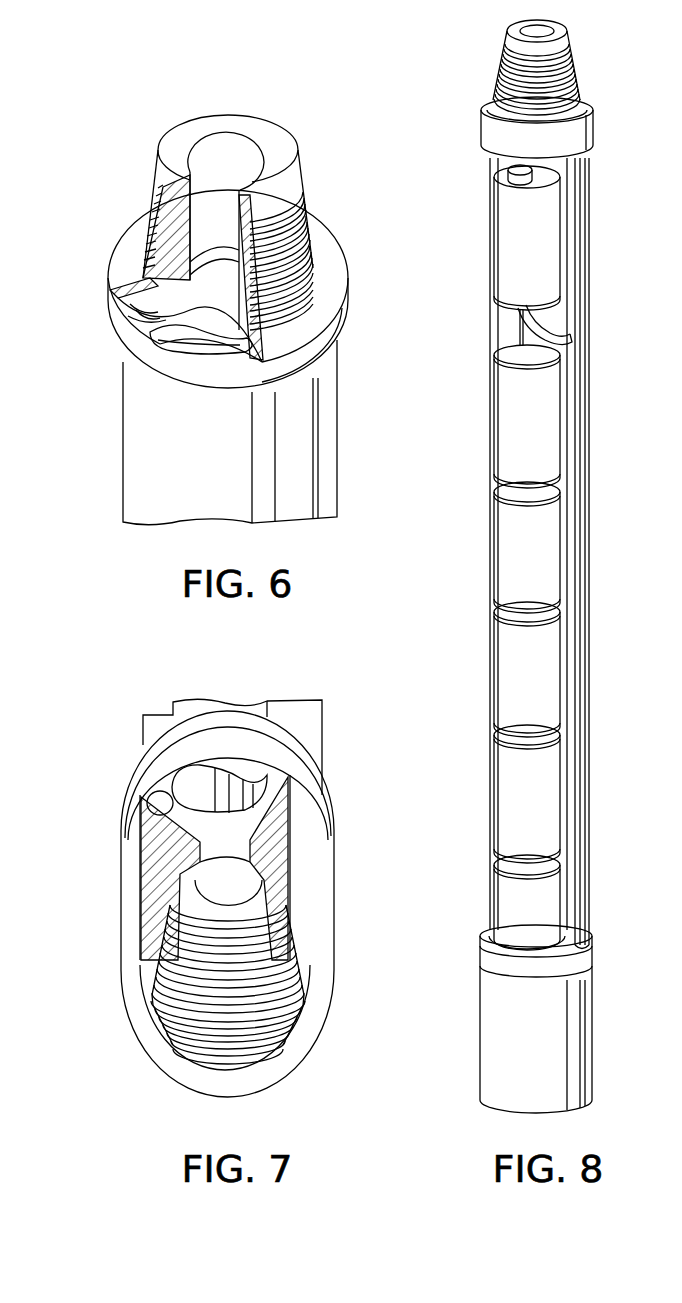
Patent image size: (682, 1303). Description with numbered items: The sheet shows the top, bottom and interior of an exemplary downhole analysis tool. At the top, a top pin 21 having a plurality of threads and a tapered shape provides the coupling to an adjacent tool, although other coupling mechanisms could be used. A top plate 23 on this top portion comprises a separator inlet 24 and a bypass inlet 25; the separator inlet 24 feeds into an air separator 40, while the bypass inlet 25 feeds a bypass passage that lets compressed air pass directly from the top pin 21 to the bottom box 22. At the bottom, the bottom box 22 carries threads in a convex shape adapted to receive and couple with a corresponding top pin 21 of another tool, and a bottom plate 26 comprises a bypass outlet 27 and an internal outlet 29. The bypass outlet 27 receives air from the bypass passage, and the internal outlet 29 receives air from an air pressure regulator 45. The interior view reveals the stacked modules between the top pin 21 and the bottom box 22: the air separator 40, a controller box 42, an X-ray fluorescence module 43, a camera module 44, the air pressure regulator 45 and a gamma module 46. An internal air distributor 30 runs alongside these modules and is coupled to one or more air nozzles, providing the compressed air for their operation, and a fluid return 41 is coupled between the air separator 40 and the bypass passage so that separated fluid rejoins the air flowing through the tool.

In FIG. 6, the top pin 21 is at (275, 147).
In FIG. 8, the top pin 21 is at (563, 82).
In FIG. 7, the bottom box 22 is at (322, 915).
In FIG. 8, the bottom box 22 is at (492, 1045).
In FIG. 6, the top plate 23 is at (212, 287).
In FIG. 6, the separator inlet 24 is at (143, 320).
In FIG. 6, the bypass inlet 25 is at (207, 347).
In FIG. 7, the bottom plate 26 is at (152, 796).
In FIG. 7, the bypass outlet 27 is at (228, 768).
In FIG. 7, the internal outlet 29 is at (183, 825).
In FIG. 8, the internal air distributor 30 is at (590, 190).
In FIG. 8, the air separator 40 is at (537, 243).
In FIG. 8, the fluid return 41 is at (568, 338).
In FIG. 8, the controller box 42 is at (541, 420).
In FIG. 8, the X-ray fluorescence module 43 is at (536, 550).
In FIG. 8, the camera module 44 is at (541, 660).
In FIG. 8, the air pressure regulator 45 is at (545, 896).
In FIG. 8, the gamma module 46 is at (541, 790).